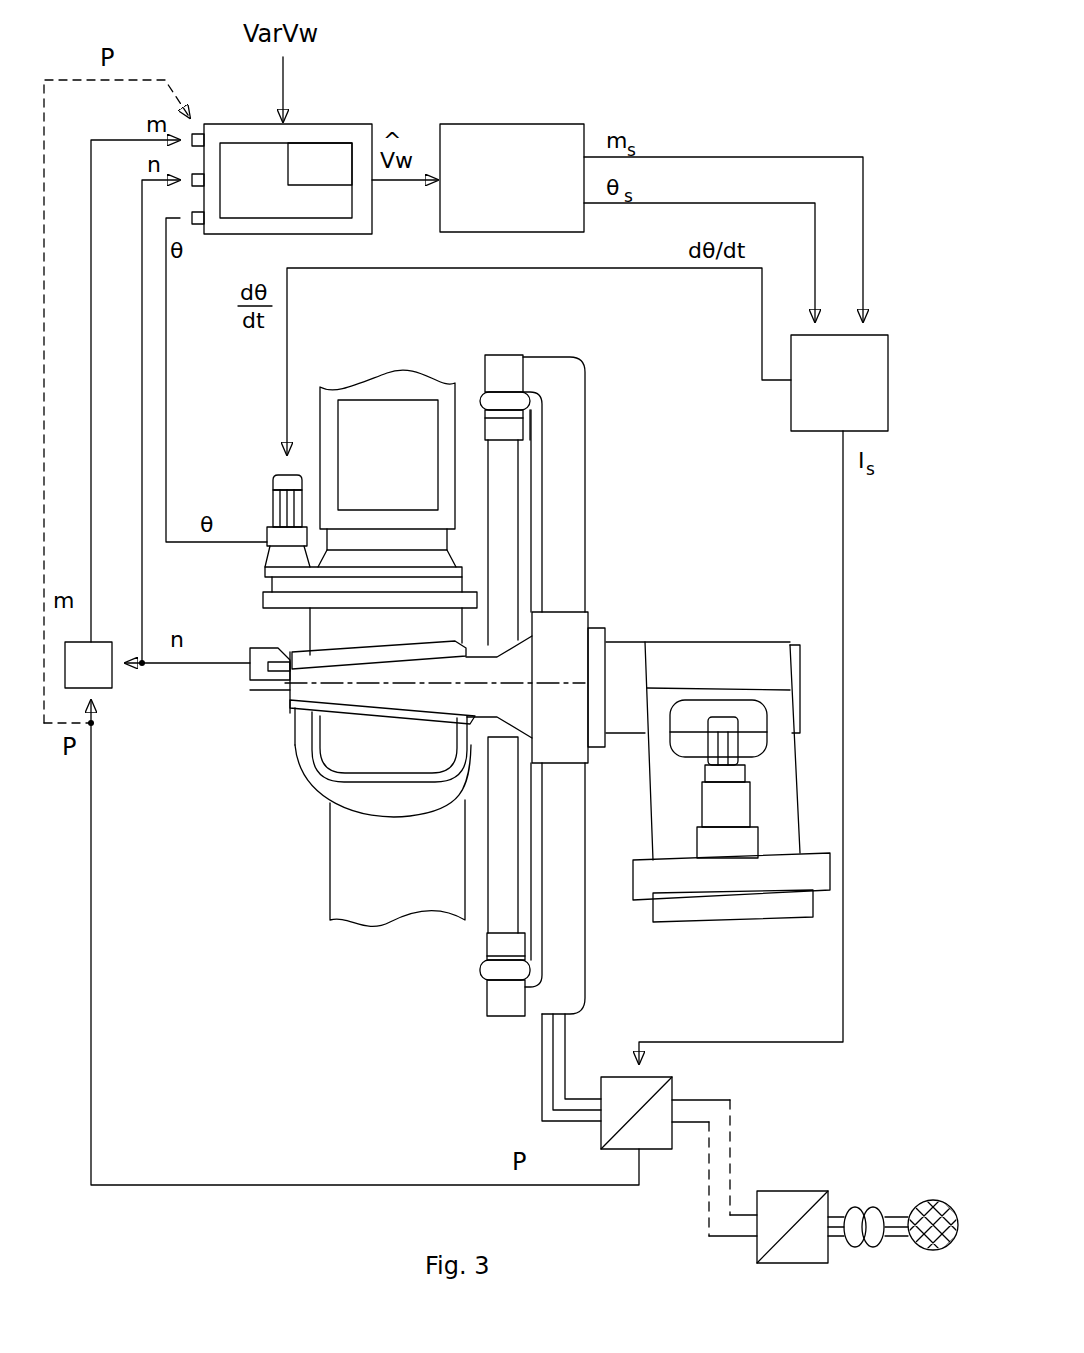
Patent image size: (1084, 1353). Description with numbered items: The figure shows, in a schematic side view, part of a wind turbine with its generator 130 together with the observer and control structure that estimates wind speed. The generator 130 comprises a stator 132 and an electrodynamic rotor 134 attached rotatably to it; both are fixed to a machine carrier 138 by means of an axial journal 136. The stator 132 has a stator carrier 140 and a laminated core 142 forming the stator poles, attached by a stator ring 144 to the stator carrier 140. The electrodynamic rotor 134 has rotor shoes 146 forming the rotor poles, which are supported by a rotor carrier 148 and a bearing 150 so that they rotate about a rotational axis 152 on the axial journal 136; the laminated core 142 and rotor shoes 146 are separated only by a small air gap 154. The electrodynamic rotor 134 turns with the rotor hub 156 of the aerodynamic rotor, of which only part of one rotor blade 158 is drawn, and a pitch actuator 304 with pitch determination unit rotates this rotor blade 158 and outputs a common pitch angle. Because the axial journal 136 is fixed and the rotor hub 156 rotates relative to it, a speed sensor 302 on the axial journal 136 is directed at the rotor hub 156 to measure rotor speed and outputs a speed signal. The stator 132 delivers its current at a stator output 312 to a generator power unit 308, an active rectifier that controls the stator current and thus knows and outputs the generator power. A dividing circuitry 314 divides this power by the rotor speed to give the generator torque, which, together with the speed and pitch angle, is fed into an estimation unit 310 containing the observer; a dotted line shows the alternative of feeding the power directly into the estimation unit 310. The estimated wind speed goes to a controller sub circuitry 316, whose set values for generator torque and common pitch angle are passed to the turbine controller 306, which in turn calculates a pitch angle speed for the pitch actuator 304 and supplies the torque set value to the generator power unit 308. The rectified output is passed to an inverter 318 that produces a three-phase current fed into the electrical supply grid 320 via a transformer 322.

The generator 130 is at (624, 351).
The stator 132 is at (599, 431).
The electrodynamic rotor 134 is at (466, 447).
The axial journal 136 is at (373, 690).
The machine carrier 138 is at (720, 660).
The stator carrier 140 is at (600, 583).
The laminated core 142 is at (500, 397).
The stator ring 144 is at (505, 347).
The rotor shoes 146 is at (515, 948).
The rotor carrier 148 is at (583, 493).
The bearing 150 is at (450, 645).
The rotational axis 152 is at (265, 690).
The air gap 154 is at (466, 947).
The rotor hub 156 is at (352, 795).
The rotor blade 158 is at (347, 445).
The speed sensor 302 is at (250, 668).
The pitch actuator 304 is at (270, 528).
The turbine controller 306 is at (797, 418).
The generator power unit 308 is at (668, 1091).
The estimation unit 310 is at (222, 232).
The stator output 312 is at (536, 1026).
The dividing circuitry 314 is at (103, 690).
The controller sub circuitry 316 is at (508, 130).
The inverter 318 is at (780, 1192).
The electrical supply grid 320 is at (938, 1200).
The transformer 322 is at (873, 1207).